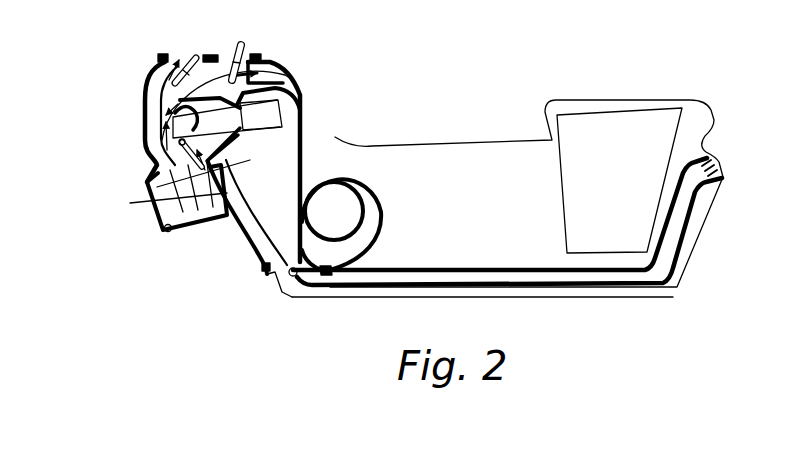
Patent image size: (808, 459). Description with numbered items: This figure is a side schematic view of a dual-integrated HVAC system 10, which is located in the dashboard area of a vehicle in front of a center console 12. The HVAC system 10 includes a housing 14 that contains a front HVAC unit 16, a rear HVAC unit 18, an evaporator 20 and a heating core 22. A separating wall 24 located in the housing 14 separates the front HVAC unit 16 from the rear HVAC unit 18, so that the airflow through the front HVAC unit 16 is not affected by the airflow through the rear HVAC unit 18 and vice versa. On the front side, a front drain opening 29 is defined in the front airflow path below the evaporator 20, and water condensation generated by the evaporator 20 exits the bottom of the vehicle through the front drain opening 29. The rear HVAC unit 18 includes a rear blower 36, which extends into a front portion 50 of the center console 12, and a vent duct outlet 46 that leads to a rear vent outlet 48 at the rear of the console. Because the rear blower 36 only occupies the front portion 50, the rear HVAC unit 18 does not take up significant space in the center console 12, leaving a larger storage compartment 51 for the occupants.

The HVAC system 10 is at (200, 277).
The center console 12 is at (460, 140).
The housing 14 is at (145, 96).
The front HVAC unit 16 is at (147, 53).
The rear HVAC unit 18 is at (332, 105).
The evaporator 20 is at (147, 198).
The heating core 22 is at (297, 88).
The separating wall 24 is at (270, 142).
The front drain opening 29 is at (166, 230).
The rear blower 36 is at (383, 218).
The vent duct outlet 46 is at (688, 252).
The rear vent outlet 48 is at (727, 158).
The front portion 50 is at (377, 150).
The storage compartment 51 is at (603, 118).